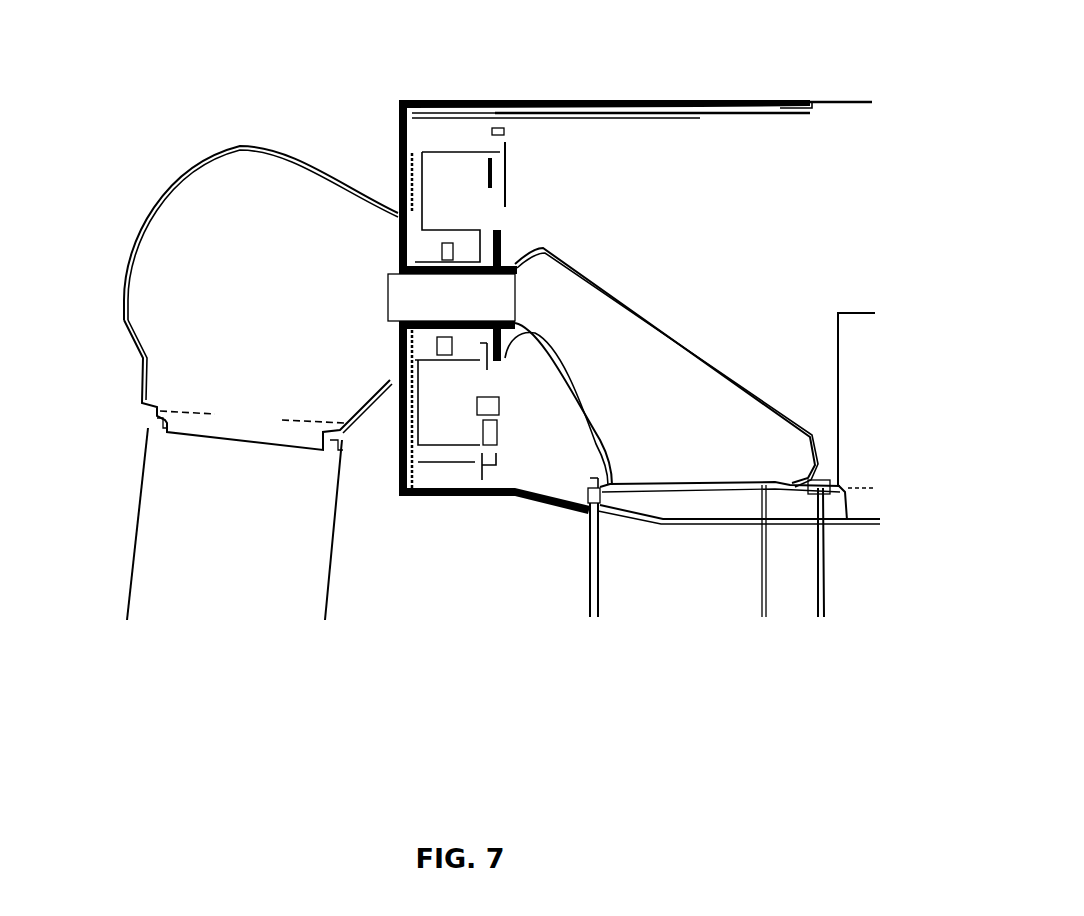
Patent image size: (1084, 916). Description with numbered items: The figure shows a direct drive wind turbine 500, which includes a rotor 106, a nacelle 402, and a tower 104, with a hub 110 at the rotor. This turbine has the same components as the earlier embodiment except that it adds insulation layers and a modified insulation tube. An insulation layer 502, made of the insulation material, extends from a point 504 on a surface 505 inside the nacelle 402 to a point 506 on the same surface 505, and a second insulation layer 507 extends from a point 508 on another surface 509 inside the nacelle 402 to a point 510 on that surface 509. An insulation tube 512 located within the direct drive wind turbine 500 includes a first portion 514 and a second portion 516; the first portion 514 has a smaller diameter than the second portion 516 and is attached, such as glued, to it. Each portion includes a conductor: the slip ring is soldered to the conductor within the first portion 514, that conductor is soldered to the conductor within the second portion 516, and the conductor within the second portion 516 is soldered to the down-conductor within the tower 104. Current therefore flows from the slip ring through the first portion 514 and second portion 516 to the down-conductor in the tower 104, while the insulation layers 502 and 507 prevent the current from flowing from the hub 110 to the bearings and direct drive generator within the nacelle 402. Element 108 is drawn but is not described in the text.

The tower 104 is at (830, 578).
The rotor 106 is at (96, 274).
The panel 108 is at (130, 580).
The hub 110 is at (233, 145).
The nacelle 402 is at (857, 523).
The direct drive wind turbine 500 is at (436, 690).
The insulation layer 502 is at (677, 102).
The point 504 is at (813, 107).
The surface 505 is at (853, 105).
The point 506 is at (520, 100).
The insulation layer 507 is at (455, 497).
The point 508 is at (535, 345).
The surface 509 is at (845, 487).
The point 510 is at (590, 617).
The insulation tube 512 is at (726, 260).
The first portion 514 is at (425, 297).
The second portion 516 is at (755, 397).